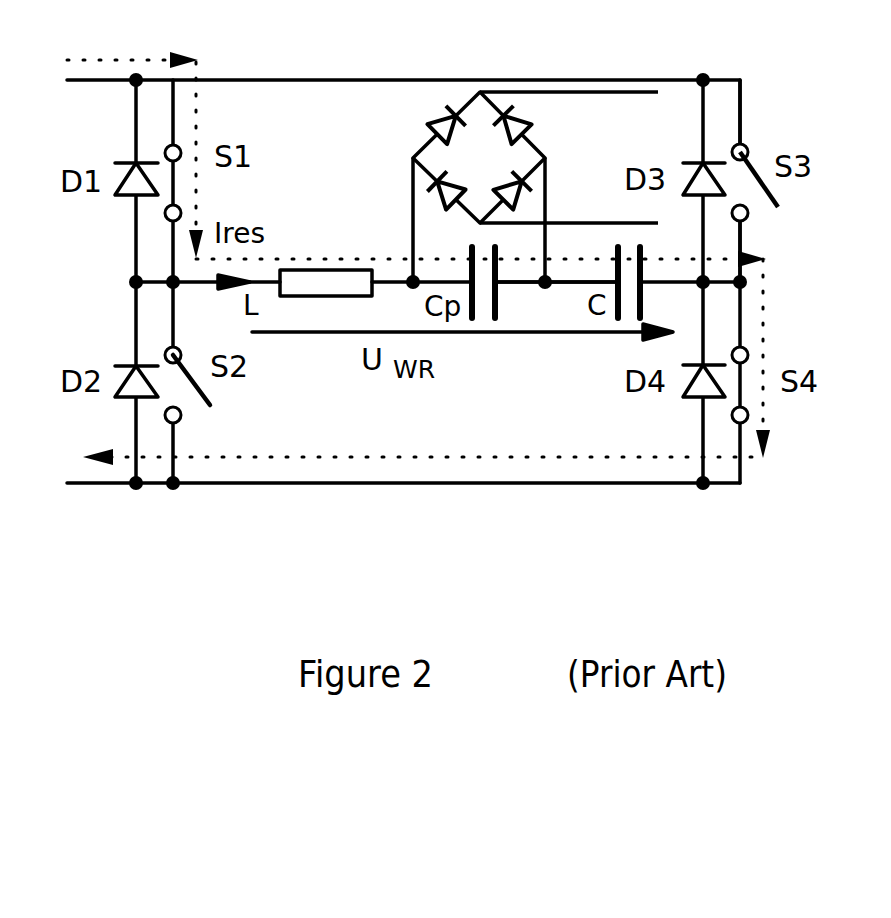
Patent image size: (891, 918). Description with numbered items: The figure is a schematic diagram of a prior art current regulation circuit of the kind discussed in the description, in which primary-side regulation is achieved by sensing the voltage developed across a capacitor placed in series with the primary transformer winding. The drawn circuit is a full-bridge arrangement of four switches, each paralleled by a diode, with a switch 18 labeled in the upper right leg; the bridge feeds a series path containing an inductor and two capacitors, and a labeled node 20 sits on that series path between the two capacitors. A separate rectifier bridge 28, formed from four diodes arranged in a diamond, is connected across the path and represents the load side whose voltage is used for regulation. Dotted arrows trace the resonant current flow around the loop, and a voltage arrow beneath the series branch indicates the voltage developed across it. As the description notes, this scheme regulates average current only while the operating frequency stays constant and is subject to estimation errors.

The switching element S3 18 is at (740, 118).
The rectifier bridge 28 is at (548, 152).
The resonant circuit connection 20 is at (517, 290).